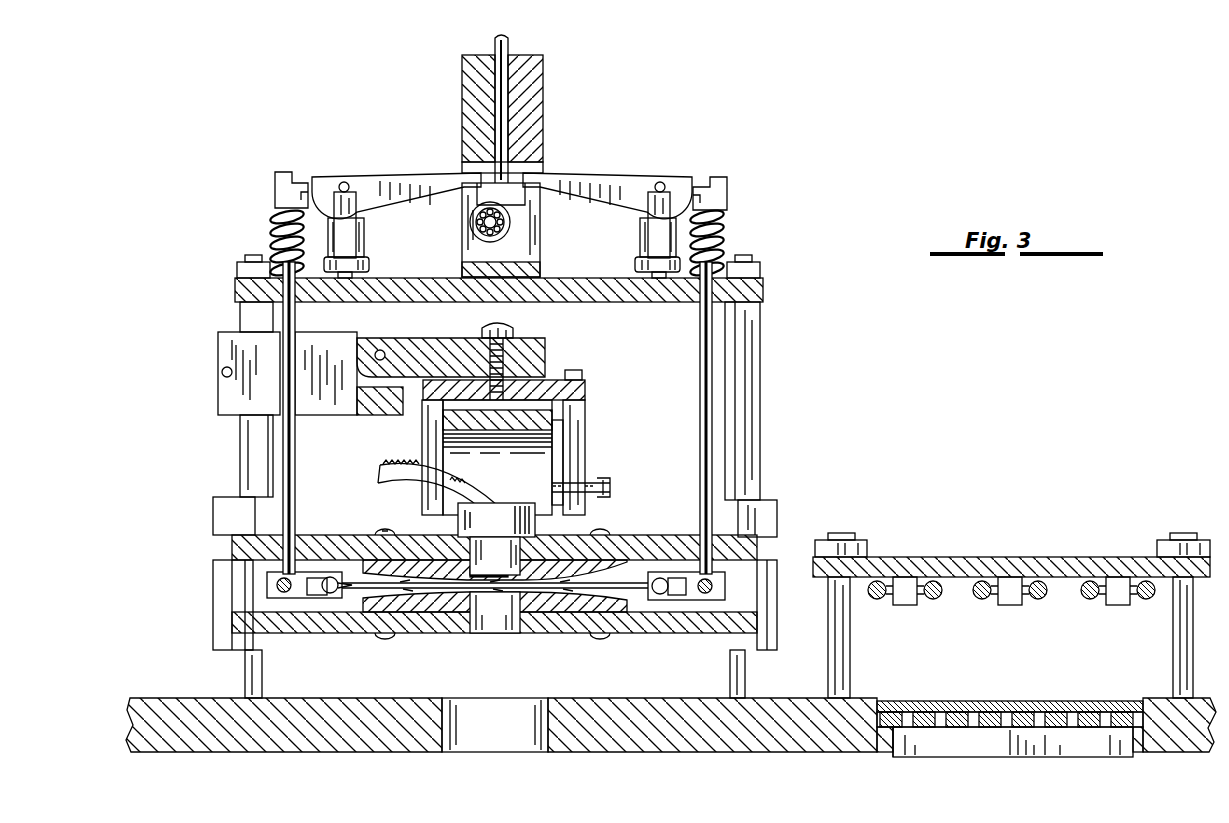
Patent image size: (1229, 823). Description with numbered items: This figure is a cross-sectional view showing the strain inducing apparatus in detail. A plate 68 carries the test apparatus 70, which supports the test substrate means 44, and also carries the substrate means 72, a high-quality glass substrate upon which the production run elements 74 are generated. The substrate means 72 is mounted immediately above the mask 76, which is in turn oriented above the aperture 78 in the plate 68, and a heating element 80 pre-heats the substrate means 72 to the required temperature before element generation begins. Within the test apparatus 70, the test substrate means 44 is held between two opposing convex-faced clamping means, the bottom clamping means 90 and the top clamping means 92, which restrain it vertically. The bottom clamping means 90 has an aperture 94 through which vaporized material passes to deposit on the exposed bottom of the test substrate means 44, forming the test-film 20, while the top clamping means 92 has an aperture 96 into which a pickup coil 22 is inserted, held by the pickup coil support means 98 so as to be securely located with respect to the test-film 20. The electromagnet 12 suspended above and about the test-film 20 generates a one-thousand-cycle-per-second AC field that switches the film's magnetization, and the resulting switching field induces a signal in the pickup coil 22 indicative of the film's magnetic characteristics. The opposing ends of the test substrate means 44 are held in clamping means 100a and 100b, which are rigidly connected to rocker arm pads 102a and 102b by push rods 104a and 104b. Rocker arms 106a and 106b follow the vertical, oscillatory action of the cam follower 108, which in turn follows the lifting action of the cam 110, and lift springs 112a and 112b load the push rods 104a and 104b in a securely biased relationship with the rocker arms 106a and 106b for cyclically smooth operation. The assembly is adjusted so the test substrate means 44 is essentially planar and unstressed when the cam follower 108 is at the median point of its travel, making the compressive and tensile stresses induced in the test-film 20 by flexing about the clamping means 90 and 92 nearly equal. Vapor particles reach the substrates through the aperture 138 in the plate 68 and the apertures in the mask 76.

The electromagnet 12 is at (553, 439).
The test-film 20 is at (501, 601).
The pickup coil 22 is at (496, 568).
The test substrate means 44 is at (352, 600).
The plate 68 is at (272, 754).
The test apparatus 70 is at (798, 375).
The substrate means 72 is at (1042, 702).
The production run elements 74 is at (1075, 726).
The mask 76 is at (927, 729).
The aperture 78 is at (975, 746).
The heating element 80 is at (1030, 574).
The bottom clamping means 90 is at (618, 606).
The top clamping means 92 is at (600, 575).
The aperture 94 is at (472, 613).
The aperture 96 is at (530, 548).
The pickup coil support means 98 is at (518, 564).
The clamping means 100a is at (713, 601).
The clamping means 100b is at (276, 599).
The rocker arm pad 102a is at (728, 187).
The rocker arm pad 102b is at (274, 186).
The push rod 104a is at (717, 441).
The push rod 104b is at (283, 441).
The rocker arm 106a is at (618, 171).
The rocker arm 106b is at (381, 171).
The cam follower 108 is at (509, 40).
The cam 110 is at (470, 225).
The lift spring 112a is at (726, 232).
The lift spring 112b is at (270, 233).
The aperture 138 is at (514, 737).